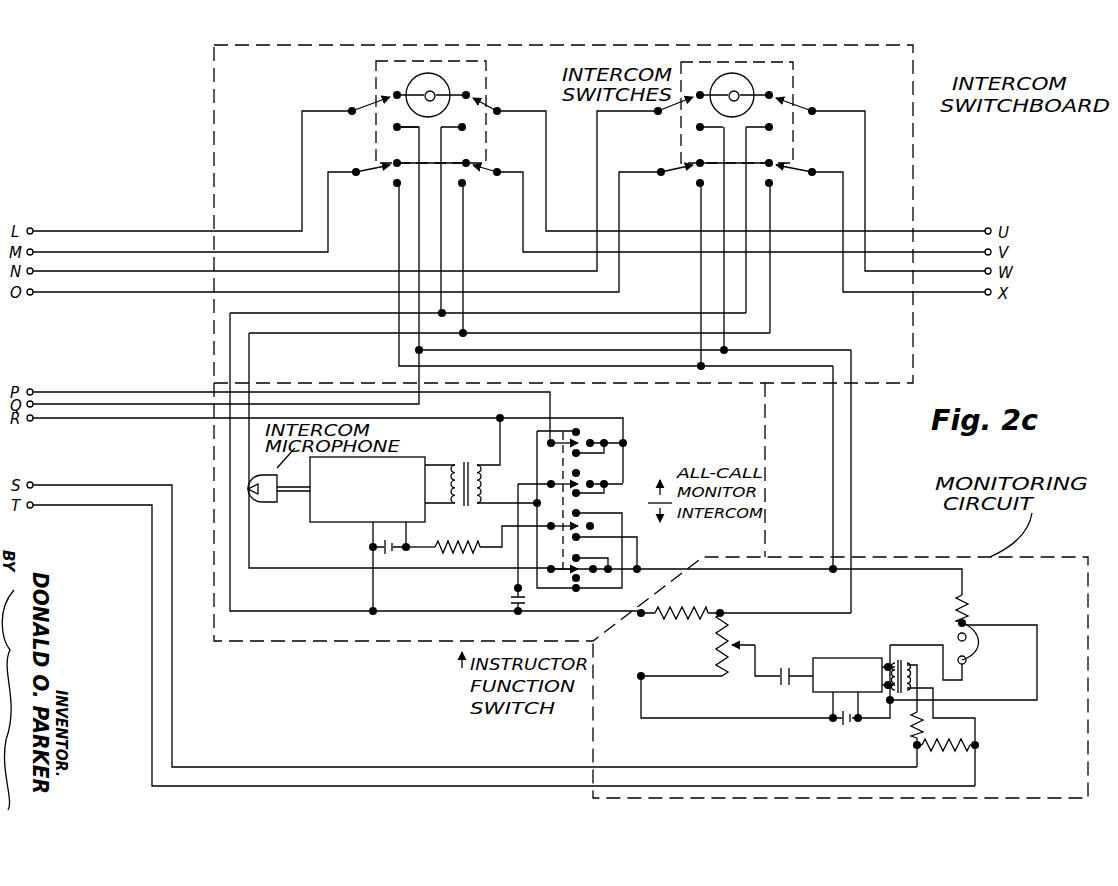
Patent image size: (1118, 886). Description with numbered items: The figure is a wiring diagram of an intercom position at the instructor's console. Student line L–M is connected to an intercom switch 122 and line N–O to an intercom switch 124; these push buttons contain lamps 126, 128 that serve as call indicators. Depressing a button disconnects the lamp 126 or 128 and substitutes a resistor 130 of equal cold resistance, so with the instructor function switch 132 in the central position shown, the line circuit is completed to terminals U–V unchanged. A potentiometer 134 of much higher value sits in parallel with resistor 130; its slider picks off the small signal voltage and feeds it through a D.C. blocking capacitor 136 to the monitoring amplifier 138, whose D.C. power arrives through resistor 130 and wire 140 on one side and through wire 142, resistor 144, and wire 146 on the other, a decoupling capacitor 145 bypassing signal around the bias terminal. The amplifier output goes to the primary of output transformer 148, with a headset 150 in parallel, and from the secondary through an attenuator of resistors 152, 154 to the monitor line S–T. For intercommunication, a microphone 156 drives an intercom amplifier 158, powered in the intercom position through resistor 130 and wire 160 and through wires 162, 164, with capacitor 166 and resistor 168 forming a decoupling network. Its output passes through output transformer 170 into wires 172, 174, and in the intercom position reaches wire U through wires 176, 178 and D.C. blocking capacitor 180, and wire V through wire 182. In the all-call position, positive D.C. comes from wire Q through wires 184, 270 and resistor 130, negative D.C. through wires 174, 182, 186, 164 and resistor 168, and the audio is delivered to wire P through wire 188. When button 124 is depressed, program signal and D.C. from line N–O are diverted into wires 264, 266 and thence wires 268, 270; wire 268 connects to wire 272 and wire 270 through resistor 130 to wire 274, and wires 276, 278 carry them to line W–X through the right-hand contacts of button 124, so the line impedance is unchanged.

The intercom switch 122 is at (487, 81).
The intercom switch 124 is at (795, 92).
The lamp 126 is at (440, 84).
The lamp 128 is at (757, 76).
The resistor 130 is at (720, 608).
The instructor function switch 132 is at (563, 505).
The potentiometer 134 is at (712, 648).
The D.C. blocking capacitor 136 is at (784, 667).
The monitoring amplifier 138 is at (872, 655).
The wire 140 is at (763, 720).
The wire 142 is at (930, 571).
The resistor 144 is at (963, 600).
The decoupling capacitor 145 is at (858, 728).
The wire 146 is at (1036, 700).
The output transformer 148 is at (937, 625).
The headset 150 is at (974, 648).
The resistor 152 is at (915, 727).
The resistor 154 is at (950, 745).
The microphone 156 is at (279, 503).
The intercom amplifier 158 is at (340, 524).
The wire 160 is at (380, 586).
The wire 162 is at (638, 543).
The wire 164 is at (502, 530).
The capacitor 166 is at (390, 550).
The resistor 168 is at (468, 553).
The output transformer 170 is at (468, 457).
The wire 172 is at (502, 452).
The wire 174 is at (493, 497).
The wire 176 is at (623, 434).
The wire 178 is at (516, 577).
The D.C. blocking capacitor 180 is at (510, 598).
The wire 182 is at (589, 562).
The wire 184 is at (578, 351).
The wire 186 is at (623, 514).
The wire 188 is at (537, 460).
The wire 264 is at (700, 277).
The wire 266 is at (722, 292).
The wire 268 is at (812, 572).
The wire 270 is at (802, 615).
The wire 272 is at (283, 570).
The wire 274 is at (303, 609).
The wire 276 is at (517, 323).
The wire 278 is at (503, 300).